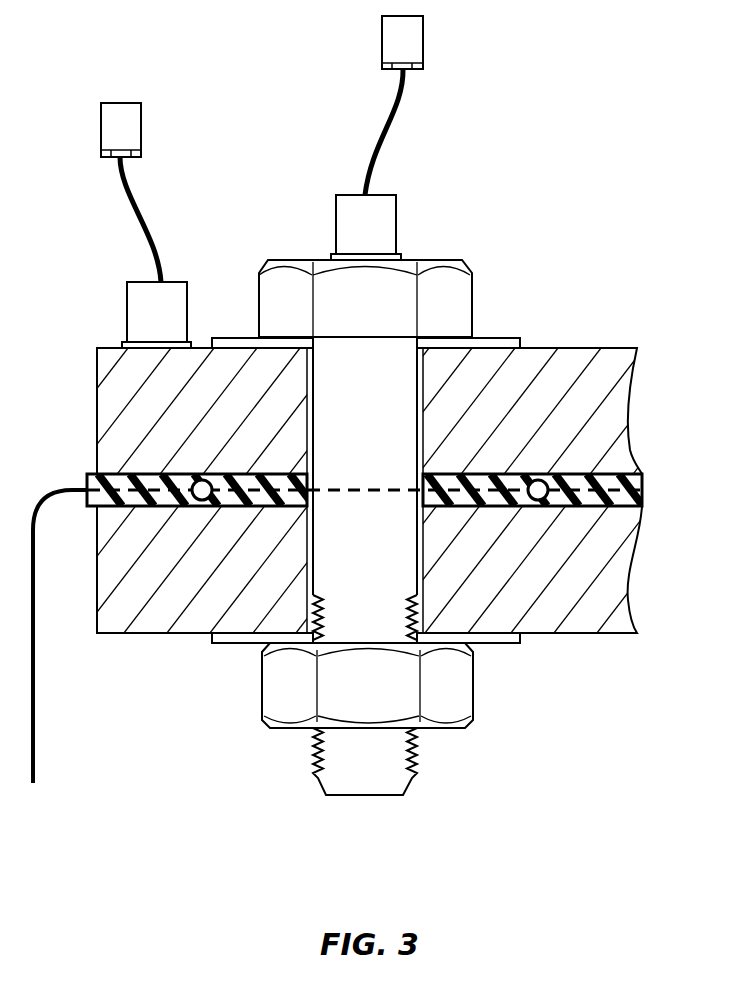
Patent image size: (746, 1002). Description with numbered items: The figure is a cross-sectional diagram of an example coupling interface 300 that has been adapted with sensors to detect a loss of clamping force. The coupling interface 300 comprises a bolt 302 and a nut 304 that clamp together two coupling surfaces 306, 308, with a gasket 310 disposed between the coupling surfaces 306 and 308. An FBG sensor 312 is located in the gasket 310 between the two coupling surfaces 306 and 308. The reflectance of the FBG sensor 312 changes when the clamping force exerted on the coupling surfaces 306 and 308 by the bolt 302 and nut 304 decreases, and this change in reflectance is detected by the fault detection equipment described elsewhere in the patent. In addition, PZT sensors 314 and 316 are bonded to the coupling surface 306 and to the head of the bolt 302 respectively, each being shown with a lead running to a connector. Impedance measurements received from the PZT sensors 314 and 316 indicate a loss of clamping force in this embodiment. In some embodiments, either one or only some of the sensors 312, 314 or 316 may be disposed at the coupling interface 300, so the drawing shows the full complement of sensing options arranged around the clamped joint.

The coupling interface 300 is at (505, 88).
The bolt 302 is at (472, 297).
The nut 304 is at (473, 690).
The coupling surface 306 is at (641, 392).
The coupling surface 308 is at (635, 563).
The gasket 310 is at (642, 486).
The FBG sensor 312 is at (196, 482).
The PZT sensor 314 is at (175, 280).
The PZT sensor 316 is at (398, 216).